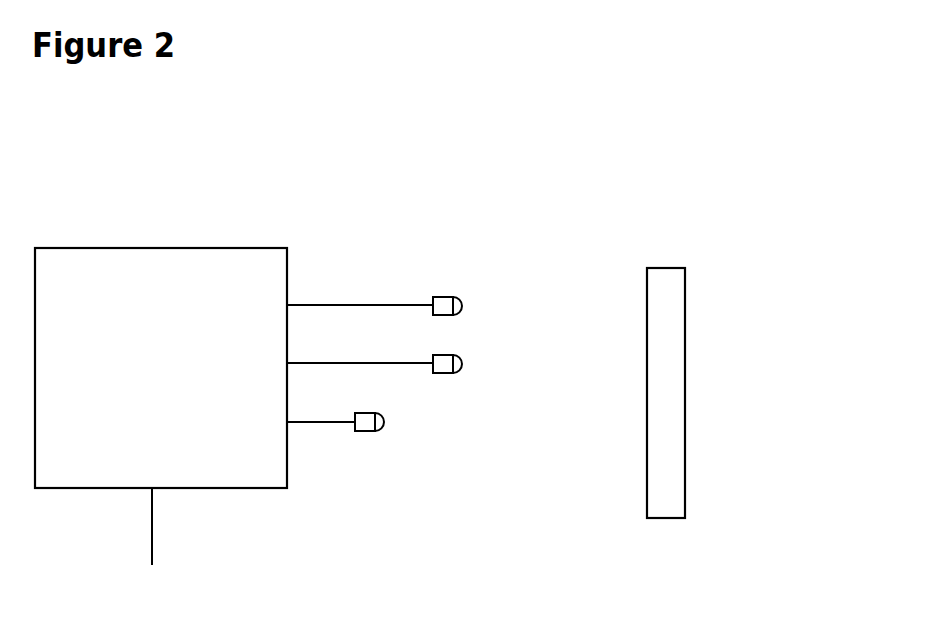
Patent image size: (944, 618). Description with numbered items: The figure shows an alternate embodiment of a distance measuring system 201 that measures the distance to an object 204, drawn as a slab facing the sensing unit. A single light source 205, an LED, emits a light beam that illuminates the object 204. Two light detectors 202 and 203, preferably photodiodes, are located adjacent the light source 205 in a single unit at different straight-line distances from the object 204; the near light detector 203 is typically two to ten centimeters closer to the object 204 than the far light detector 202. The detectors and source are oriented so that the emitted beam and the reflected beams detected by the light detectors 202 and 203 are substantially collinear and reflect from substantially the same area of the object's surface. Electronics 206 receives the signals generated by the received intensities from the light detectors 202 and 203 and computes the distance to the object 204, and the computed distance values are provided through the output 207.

The distance measuring system 201 is at (846, 214).
The far light detector 202 is at (385, 432).
The near light detector 203 is at (462, 365).
The object 204 is at (685, 373).
The light source 205 is at (453, 293).
The electronics 206 is at (190, 248).
The output 207 is at (160, 547).